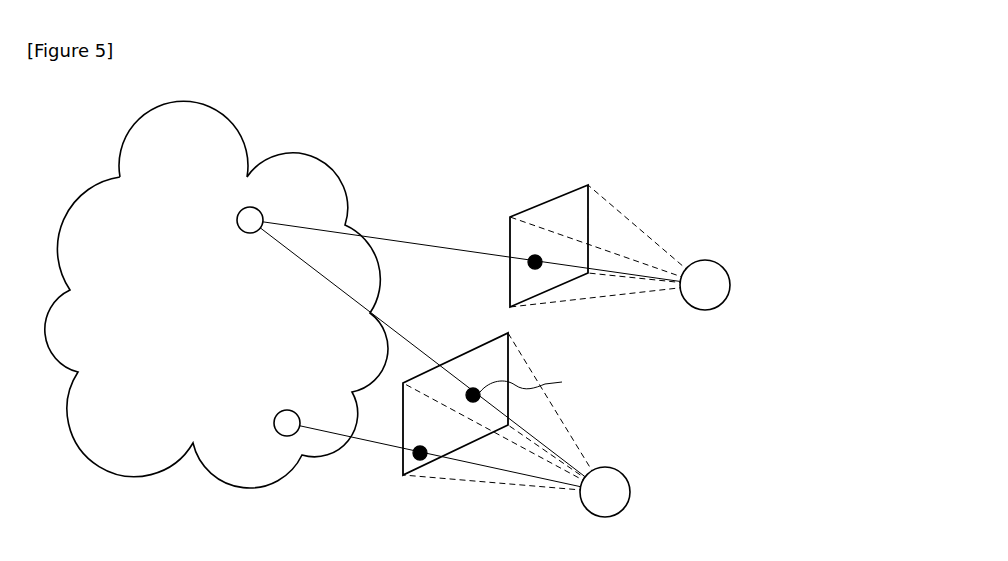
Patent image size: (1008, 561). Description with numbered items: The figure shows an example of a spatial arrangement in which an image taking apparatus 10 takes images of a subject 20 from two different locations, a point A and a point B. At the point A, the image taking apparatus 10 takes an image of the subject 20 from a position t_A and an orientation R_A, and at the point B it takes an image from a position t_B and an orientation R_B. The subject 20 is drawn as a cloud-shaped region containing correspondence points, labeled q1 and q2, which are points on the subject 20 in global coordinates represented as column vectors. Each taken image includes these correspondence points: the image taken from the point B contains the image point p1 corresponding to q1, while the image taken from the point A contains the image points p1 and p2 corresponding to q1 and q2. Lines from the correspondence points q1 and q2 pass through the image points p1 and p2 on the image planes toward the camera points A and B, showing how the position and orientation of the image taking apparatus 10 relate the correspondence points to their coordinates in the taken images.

The image taking apparatus 10 is at (591, 373).
The subject 20 is at (216, 311).
The point A is at (567, 447).
The point B is at (650, 247).
The correspondence point q1 is at (175, 212).
The correspondence point q2 is at (203, 413).
The image point p1 is at (521, 270).
The image point p2 is at (410, 455).